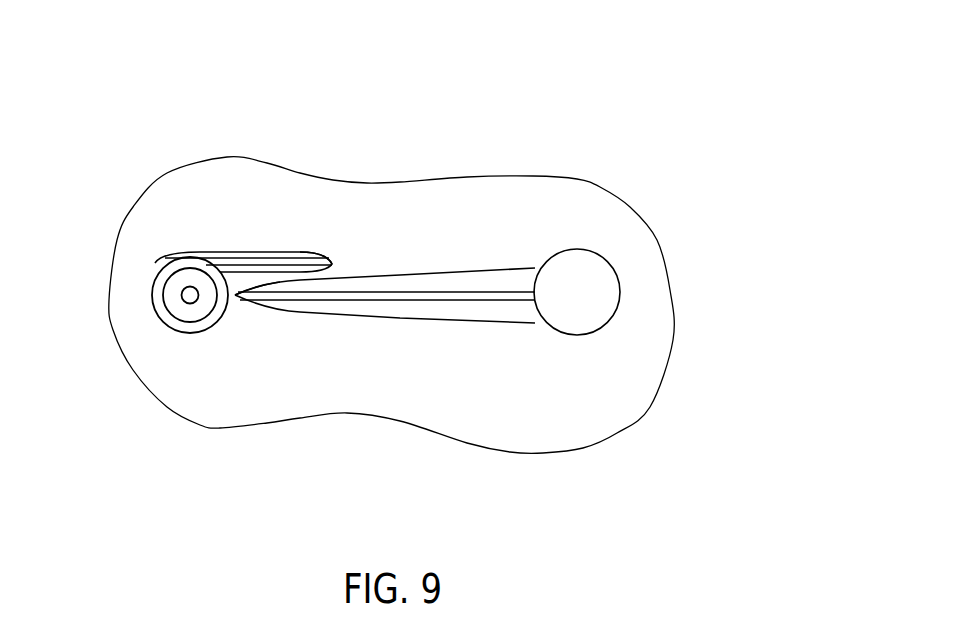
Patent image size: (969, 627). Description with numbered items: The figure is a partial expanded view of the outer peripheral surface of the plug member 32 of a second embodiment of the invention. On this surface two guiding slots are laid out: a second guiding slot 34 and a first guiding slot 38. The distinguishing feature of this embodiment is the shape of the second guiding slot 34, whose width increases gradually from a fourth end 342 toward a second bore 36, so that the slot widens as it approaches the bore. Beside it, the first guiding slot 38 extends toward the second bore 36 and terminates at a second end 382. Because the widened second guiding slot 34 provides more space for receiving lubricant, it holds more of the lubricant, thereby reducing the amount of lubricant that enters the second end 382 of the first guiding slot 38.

The plug member 32 is at (577, 180).
The second guiding slot 34 is at (235, 250).
The fourth end 342 is at (331, 262).
The second bore 36 is at (167, 330).
The first guiding slot 38 is at (438, 319).
The second end 382 is at (232, 300).